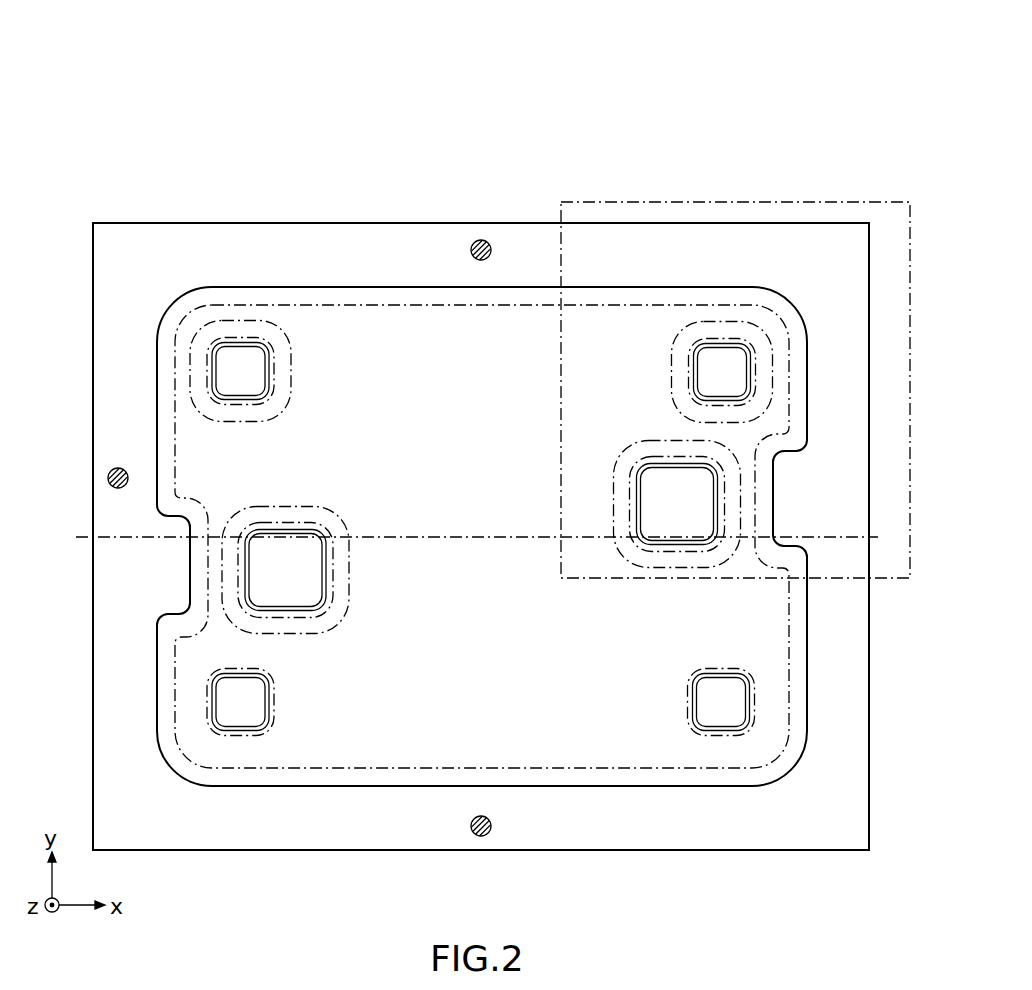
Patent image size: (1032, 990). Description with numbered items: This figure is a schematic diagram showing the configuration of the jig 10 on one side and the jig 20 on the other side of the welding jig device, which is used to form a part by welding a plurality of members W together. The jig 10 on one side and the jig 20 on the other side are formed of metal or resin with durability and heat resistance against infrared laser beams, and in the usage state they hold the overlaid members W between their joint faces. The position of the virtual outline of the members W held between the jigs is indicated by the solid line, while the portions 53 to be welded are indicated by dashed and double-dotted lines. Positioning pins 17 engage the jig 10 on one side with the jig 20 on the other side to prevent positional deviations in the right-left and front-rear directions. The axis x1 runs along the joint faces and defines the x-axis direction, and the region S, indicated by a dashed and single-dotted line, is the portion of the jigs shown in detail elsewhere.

The jig on one side 10 is at (481, 439).
The jig on the other side 20 is at (347, 156).
The positioning pins 17 is at (490, 240).
The welded portions 53 is at (789, 710).
The members W is at (807, 622).
The region S is at (858, 202).
The axis x1 is at (476, 538).